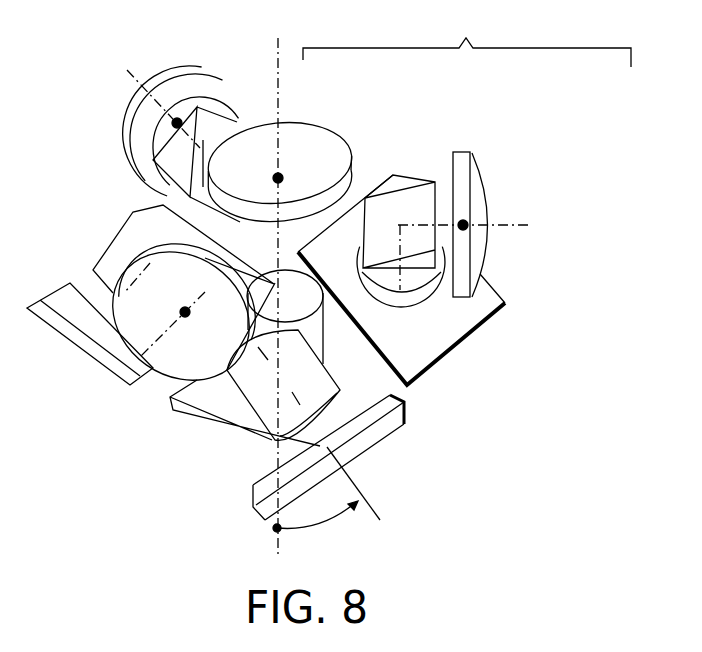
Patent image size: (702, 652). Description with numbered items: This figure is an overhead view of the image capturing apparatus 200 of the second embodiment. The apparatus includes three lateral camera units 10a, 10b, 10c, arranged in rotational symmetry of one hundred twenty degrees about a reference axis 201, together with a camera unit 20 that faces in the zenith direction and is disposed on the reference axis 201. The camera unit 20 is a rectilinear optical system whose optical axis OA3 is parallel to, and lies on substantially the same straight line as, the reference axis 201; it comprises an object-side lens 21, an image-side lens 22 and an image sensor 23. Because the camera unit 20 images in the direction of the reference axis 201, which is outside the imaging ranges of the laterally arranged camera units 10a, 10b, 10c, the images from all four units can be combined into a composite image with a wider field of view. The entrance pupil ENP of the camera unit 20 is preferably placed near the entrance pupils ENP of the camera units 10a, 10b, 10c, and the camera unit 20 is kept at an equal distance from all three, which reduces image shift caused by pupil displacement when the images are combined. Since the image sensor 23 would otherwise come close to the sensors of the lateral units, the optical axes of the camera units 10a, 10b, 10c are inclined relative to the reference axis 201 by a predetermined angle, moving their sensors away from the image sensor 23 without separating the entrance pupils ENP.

The image capturing apparatus 200 is at (68, 46).
The reference axis 201 is at (278, 62).
The camera unit 20 is at (467, 36).
The optical axis OA3 is at (280, 88).
The entrance pupil ENP is at (278, 178).
The object-side lens 21 is at (352, 172).
The image-side lens 22 is at (323, 323).
The image sensor 23 is at (345, 384).
The camera unit 10a is at (507, 300).
The camera unit 10b is at (240, 432).
The camera unit 10c is at (122, 134).